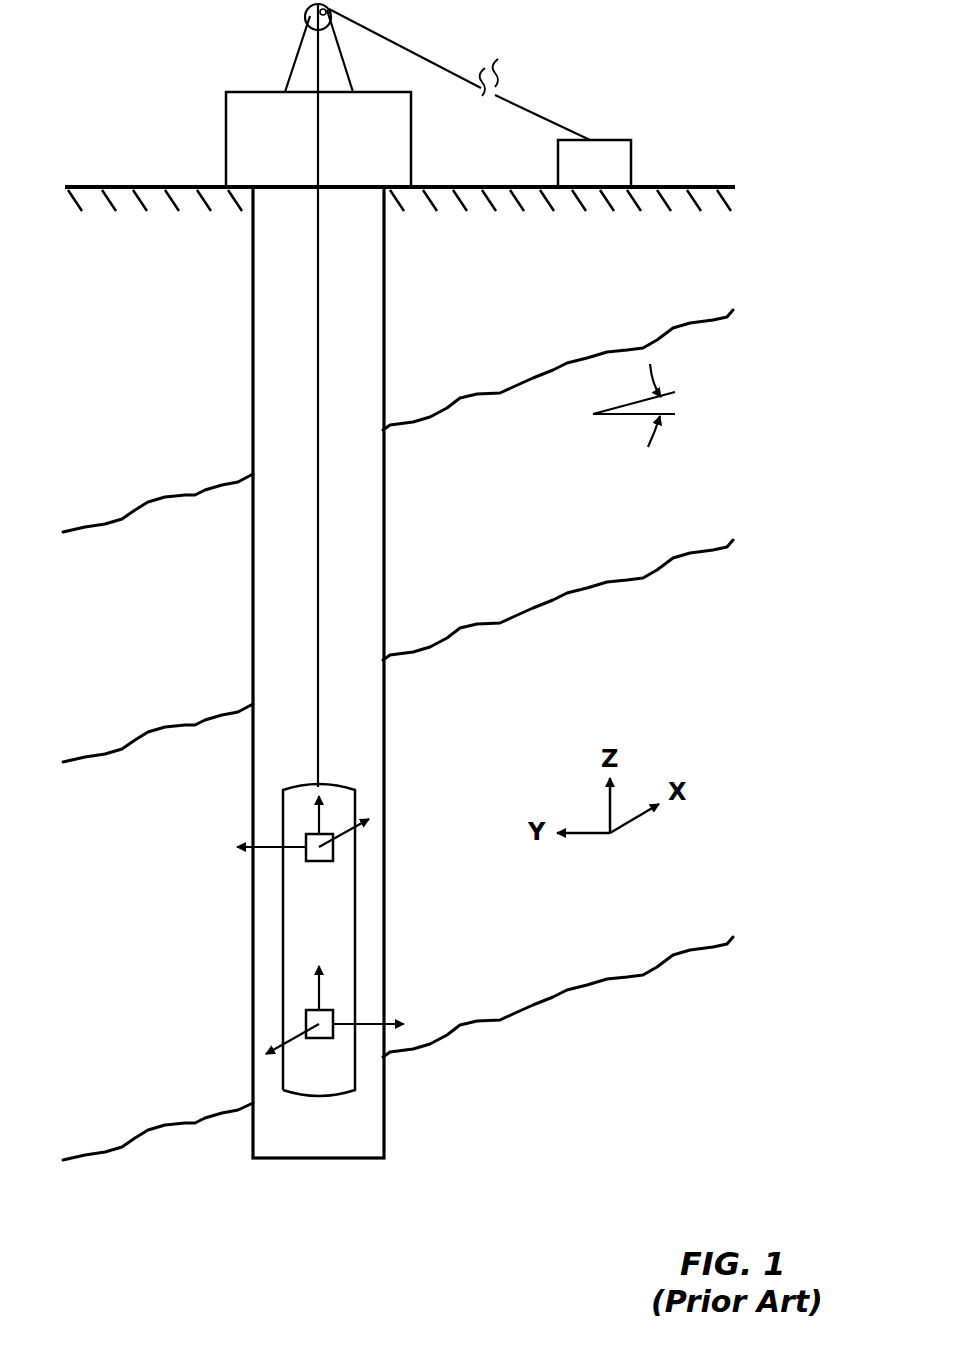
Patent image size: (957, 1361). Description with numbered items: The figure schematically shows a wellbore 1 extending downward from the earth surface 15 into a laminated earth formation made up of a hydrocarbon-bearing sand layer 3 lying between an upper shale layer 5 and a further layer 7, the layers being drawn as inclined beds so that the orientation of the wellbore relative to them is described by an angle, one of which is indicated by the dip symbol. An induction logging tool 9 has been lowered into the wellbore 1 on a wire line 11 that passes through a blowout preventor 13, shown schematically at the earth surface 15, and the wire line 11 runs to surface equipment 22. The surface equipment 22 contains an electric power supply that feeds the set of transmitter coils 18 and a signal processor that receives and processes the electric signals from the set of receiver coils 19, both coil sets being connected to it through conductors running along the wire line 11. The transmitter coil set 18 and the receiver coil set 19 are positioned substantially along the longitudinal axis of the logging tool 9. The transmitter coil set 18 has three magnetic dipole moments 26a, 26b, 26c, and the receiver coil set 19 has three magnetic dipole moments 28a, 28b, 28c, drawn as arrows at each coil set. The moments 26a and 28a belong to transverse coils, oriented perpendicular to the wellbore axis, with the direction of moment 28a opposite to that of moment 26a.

The wellbore 1 is at (292, 607).
The hydrocarbon-bearing sand layer 3 is at (131, 954).
The upper shale layer 5 is at (131, 636).
The layer 7 is at (131, 1209).
The induction logging tool 9 is at (283, 952).
The wire line 11 is at (418, 52).
The blowout preventor 13 is at (240, 130).
The earth surface 15 is at (143, 186).
The set of transmitter coils 18 is at (309, 834).
The set of receiver coils 19 is at (309, 1011).
The surface equipment 22 is at (632, 160).
The magnetic dipole moment 26a is at (345, 833).
The magnetic dipole moment 26b is at (265, 846).
The magnetic dipole moment 26c is at (322, 810).
The magnetic dipole moment 28a is at (290, 1035).
The magnetic dipole moment 28b is at (365, 1022).
The magnetic dipole moment 28c is at (320, 987).